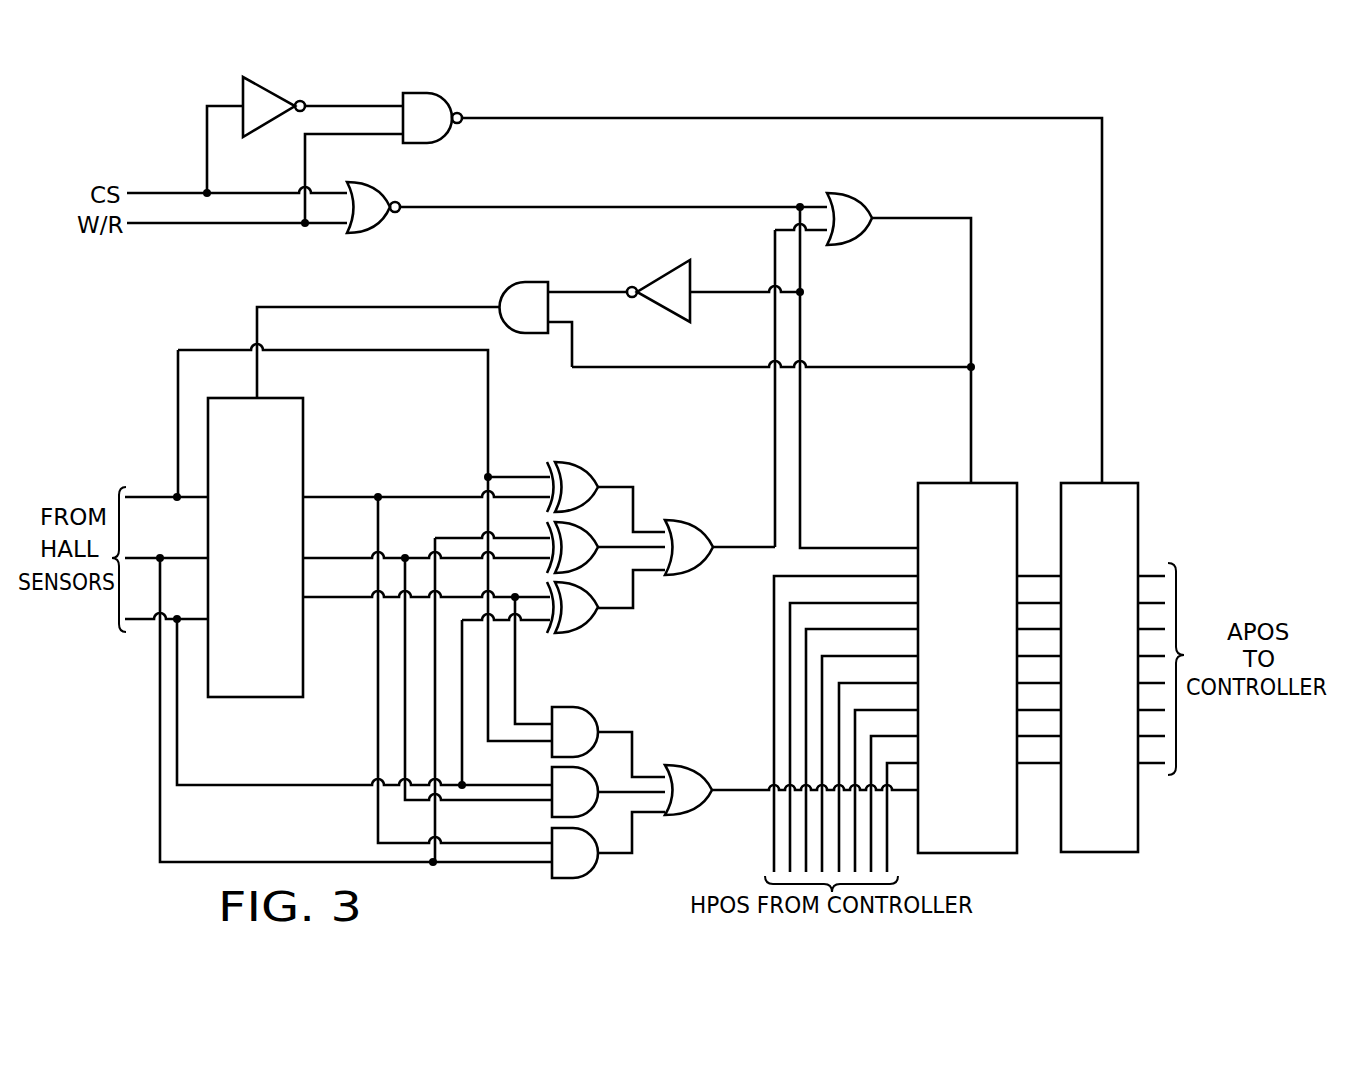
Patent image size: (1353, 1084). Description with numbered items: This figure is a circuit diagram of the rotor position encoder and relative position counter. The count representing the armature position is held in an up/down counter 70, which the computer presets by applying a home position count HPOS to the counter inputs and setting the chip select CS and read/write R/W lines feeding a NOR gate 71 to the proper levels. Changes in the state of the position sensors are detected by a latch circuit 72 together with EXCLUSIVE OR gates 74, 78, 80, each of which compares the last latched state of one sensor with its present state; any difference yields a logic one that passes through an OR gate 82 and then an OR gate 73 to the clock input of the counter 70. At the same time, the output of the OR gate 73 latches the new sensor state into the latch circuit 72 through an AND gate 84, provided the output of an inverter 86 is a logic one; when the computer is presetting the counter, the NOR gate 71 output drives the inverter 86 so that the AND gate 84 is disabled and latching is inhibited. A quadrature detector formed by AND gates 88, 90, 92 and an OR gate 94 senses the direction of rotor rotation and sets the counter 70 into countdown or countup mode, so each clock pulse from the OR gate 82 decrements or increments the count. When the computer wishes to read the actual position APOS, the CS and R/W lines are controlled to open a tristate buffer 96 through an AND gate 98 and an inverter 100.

The up/down counter 70 is at (1003, 488).
The NOR gate 71 is at (365, 213).
The latch circuit 72 is at (287, 448).
The OR gate 73 is at (848, 213).
The EXCLUSIVE OR gate 74 is at (573, 483).
The EXCLUSIVE OR gate 78 is at (573, 555).
The EXCLUSIVE OR gate 80 is at (577, 617).
The OR gate 82 is at (693, 538).
The AND gate 84 is at (525, 290).
The inverter 86 is at (678, 280).
The AND gate 88 is at (572, 722).
The AND gate 90 is at (575, 790).
The AND gate 92 is at (575, 862).
The OR gate 94 is at (690, 783).
The tristate buffer 96 is at (1122, 495).
The AND gate 98 is at (437, 112).
The inverter 100 is at (243, 101).